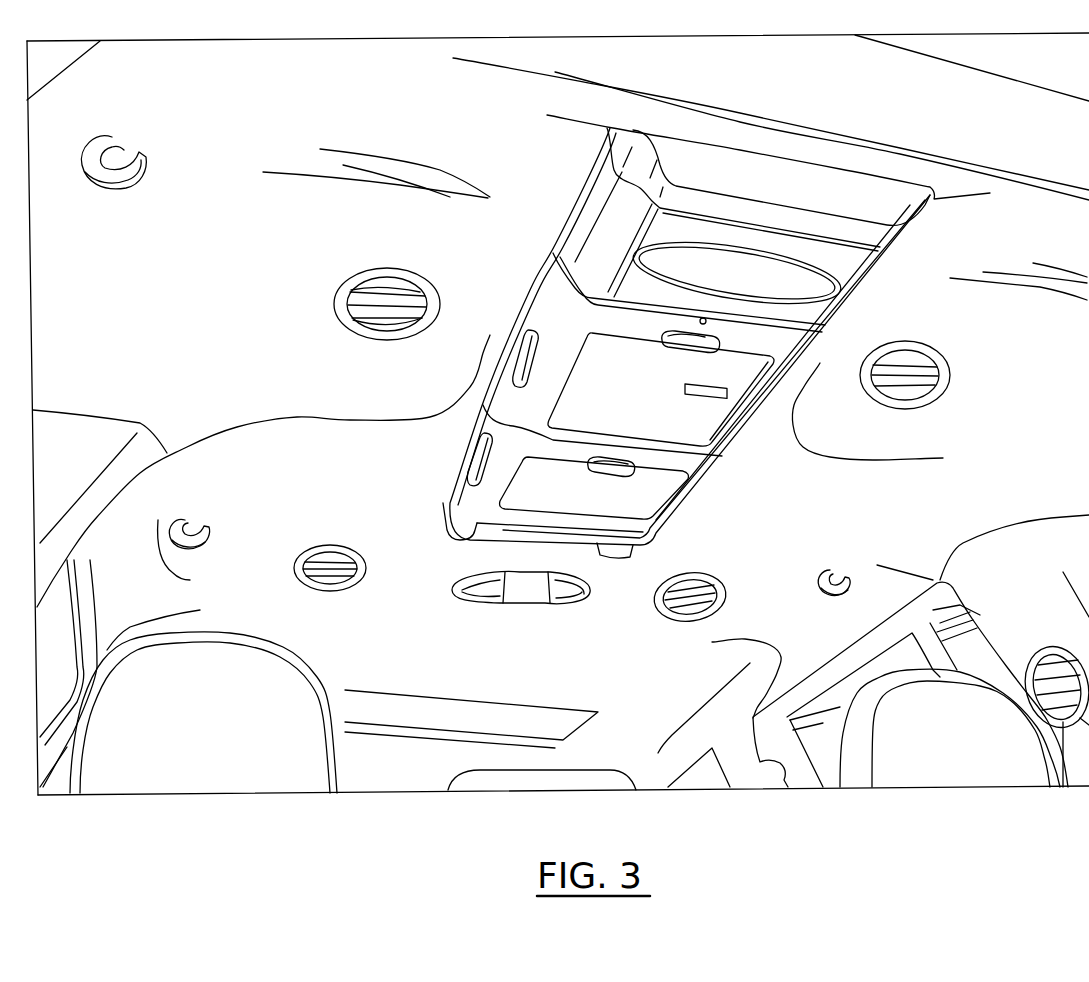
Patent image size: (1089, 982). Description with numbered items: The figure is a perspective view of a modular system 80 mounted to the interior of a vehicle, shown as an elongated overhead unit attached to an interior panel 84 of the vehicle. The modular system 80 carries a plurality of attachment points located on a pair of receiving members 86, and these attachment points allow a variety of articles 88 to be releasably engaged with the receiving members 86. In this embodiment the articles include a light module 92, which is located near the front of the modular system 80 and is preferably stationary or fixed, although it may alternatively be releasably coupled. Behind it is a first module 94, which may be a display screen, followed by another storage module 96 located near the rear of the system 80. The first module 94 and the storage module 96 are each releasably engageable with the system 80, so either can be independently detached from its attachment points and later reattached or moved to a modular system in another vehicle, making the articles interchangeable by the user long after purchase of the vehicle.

The modular system 80 is at (700, 372).
The interior panel 84 is at (361, 484).
The receiving members 86 is at (460, 540).
The articles 88 is at (527, 470).
The light module 92 is at (803, 285).
The first module 94 is at (697, 410).
The storage module 96 is at (655, 487).